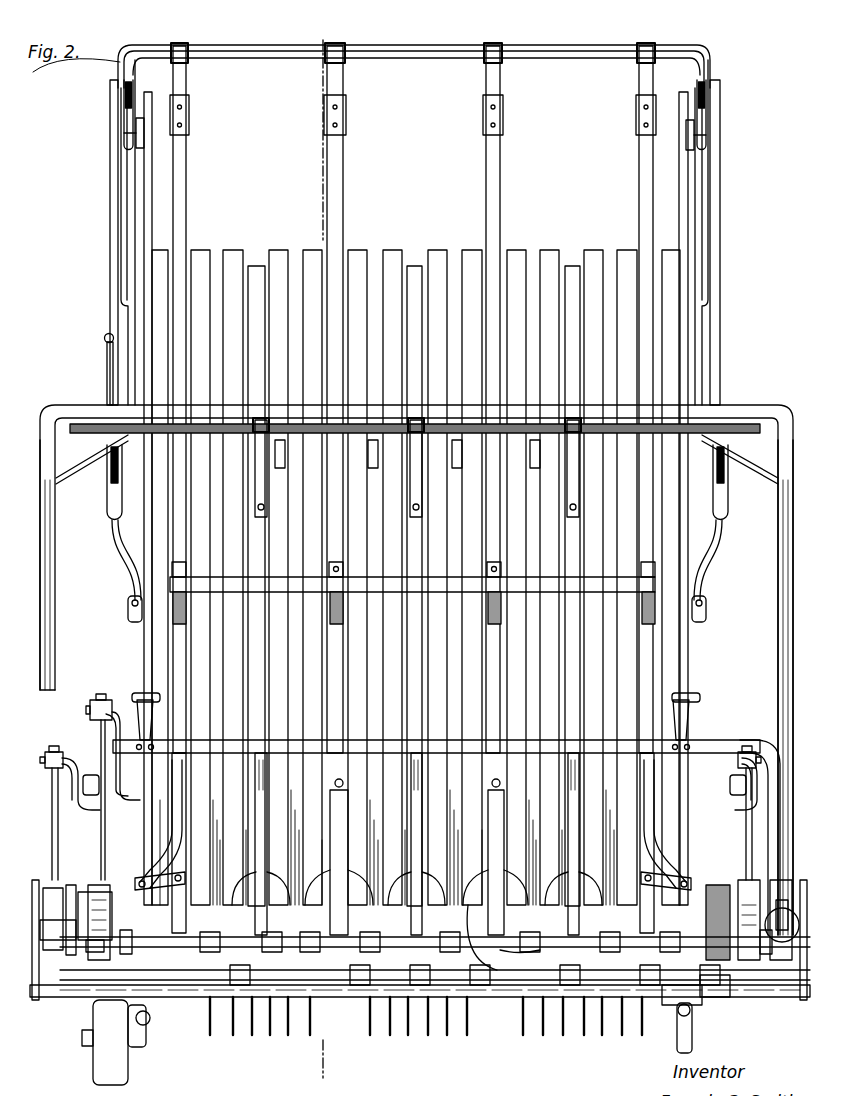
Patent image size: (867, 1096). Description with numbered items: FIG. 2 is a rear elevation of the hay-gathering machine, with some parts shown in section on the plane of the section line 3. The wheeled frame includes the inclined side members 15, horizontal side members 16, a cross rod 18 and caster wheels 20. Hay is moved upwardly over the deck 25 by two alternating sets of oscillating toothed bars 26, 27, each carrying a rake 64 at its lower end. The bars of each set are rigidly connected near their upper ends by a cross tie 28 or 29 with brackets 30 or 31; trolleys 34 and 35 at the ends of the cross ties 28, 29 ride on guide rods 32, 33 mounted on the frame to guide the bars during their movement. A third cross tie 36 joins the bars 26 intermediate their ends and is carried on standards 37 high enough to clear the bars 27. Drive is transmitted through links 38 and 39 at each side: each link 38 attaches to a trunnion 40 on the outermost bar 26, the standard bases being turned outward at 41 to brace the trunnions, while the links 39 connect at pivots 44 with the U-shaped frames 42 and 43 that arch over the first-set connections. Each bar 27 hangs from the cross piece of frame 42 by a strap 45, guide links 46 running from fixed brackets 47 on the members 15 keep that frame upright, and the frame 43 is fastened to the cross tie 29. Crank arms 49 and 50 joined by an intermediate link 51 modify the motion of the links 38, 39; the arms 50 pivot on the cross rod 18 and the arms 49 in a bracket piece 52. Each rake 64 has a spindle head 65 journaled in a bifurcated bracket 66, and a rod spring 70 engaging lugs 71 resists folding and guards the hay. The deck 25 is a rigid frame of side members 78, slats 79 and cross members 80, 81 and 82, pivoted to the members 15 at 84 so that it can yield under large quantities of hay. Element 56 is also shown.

The section line 3 is at (335, 33).
The inclined side member 15 is at (112, 218).
The horizontal side member 16 is at (130, 975).
The cross rod 18 is at (380, 1000).
The caster wheel 20 is at (95, 1069).
The deck 25 is at (168, 250).
The oscillating toothed bar 26 is at (187, 214).
The oscillating toothed bar 27 is at (257, 266).
The cross tie 28 is at (262, 51).
The cross tie 29 is at (735, 409).
The bracket 30 is at (345, 48).
The bracket 31 is at (267, 430).
The guide rod 32 is at (124, 155).
The guide rod 33 is at (113, 524).
The trolley 34 is at (126, 100).
The trolley 35 is at (110, 470).
The third cross tie 36 is at (200, 597).
The standard 37 is at (320, 615).
The link 38 is at (100, 882).
The link 39 is at (55, 940).
The trunnion 40 is at (140, 875).
The brace 41 is at (150, 860).
The U-shaped frame 42 is at (760, 745).
The U-shaped frame 43 is at (58, 690).
The pivotal connection 44 is at (758, 930).
The strap 45 is at (262, 736).
The guide link 46 is at (134, 695).
The fixed bracket 47 is at (140, 700).
The crank arm 49 is at (118, 735).
The crank arm 50 is at (106, 890).
The intermediate link 51 is at (53, 800).
The bracket piece 52 is at (96, 810).
The cylinder 56 is at (34, 878).
The rake 64 is at (270, 1040).
The rake head 65 is at (468, 960).
The bifurcated bracket 66 is at (432, 1020).
The spring 70 is at (460, 950).
The lug 71 is at (525, 960).
The longitudinal side member 78 is at (150, 183).
The intermediate slat 79 is at (396, 655).
The cross member 80 is at (362, 948).
The cross member 81 is at (375, 700).
The cross member 82 is at (378, 468).
The pivot 84 is at (142, 132).